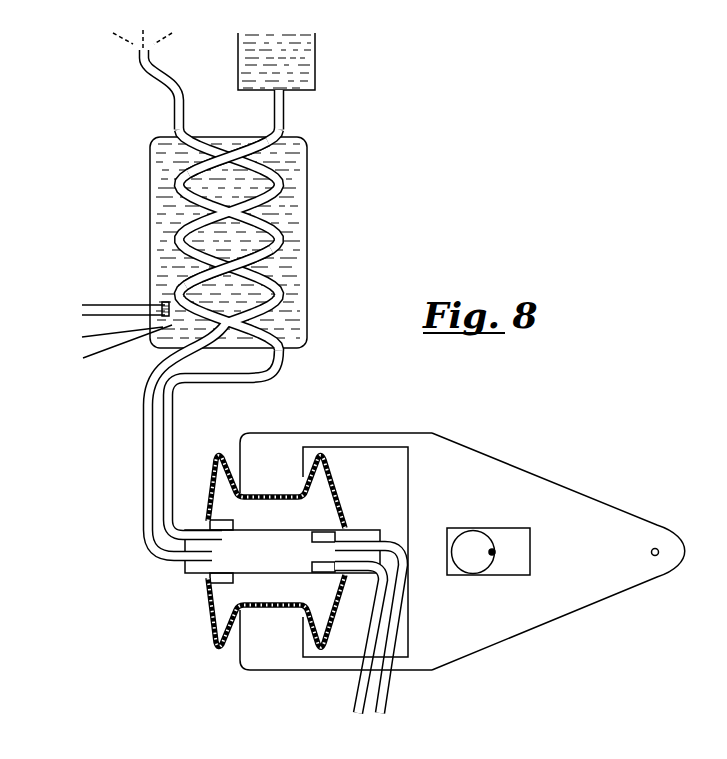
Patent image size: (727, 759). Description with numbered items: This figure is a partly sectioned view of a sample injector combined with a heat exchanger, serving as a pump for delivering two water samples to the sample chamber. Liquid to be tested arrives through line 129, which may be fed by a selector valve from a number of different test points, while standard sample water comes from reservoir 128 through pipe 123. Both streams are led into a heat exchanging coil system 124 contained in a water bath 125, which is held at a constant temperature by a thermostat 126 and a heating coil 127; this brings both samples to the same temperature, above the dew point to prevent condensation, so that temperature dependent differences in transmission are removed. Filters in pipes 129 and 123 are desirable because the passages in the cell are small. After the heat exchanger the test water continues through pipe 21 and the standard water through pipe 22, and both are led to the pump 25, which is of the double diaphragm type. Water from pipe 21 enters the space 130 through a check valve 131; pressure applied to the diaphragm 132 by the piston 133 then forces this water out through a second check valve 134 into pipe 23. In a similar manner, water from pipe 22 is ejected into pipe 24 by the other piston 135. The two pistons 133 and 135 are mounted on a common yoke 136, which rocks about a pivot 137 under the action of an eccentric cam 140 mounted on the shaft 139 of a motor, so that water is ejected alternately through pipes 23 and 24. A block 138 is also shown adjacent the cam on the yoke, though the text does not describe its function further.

The pipe 21 is at (142, 405).
The pipe 22 is at (275, 368).
The pipe 23 is at (365, 703).
The pipe 24 is at (388, 700).
The pump 25 is at (158, 628).
The pipe 123 is at (284, 108).
The heat exchanging coil system 124 is at (327, 177).
The water bath 125 is at (308, 297).
The thermostat 126 is at (108, 305).
The heating coil 127 is at (98, 357).
The reservoir 128 is at (317, 42).
The line 129 is at (170, 106).
The space 130 is at (293, 597).
The check valve 131 is at (217, 580).
The diaphragm 132 is at (337, 647).
The piston 133 is at (257, 660).
The check valve 134 is at (312, 565).
The piston 135 is at (287, 443).
The yoke 136 is at (558, 513).
The pivot 137 is at (655, 556).
The block 138 is at (532, 552).
The shaft 139 is at (492, 555).
The eccentric cam 140 is at (472, 540).